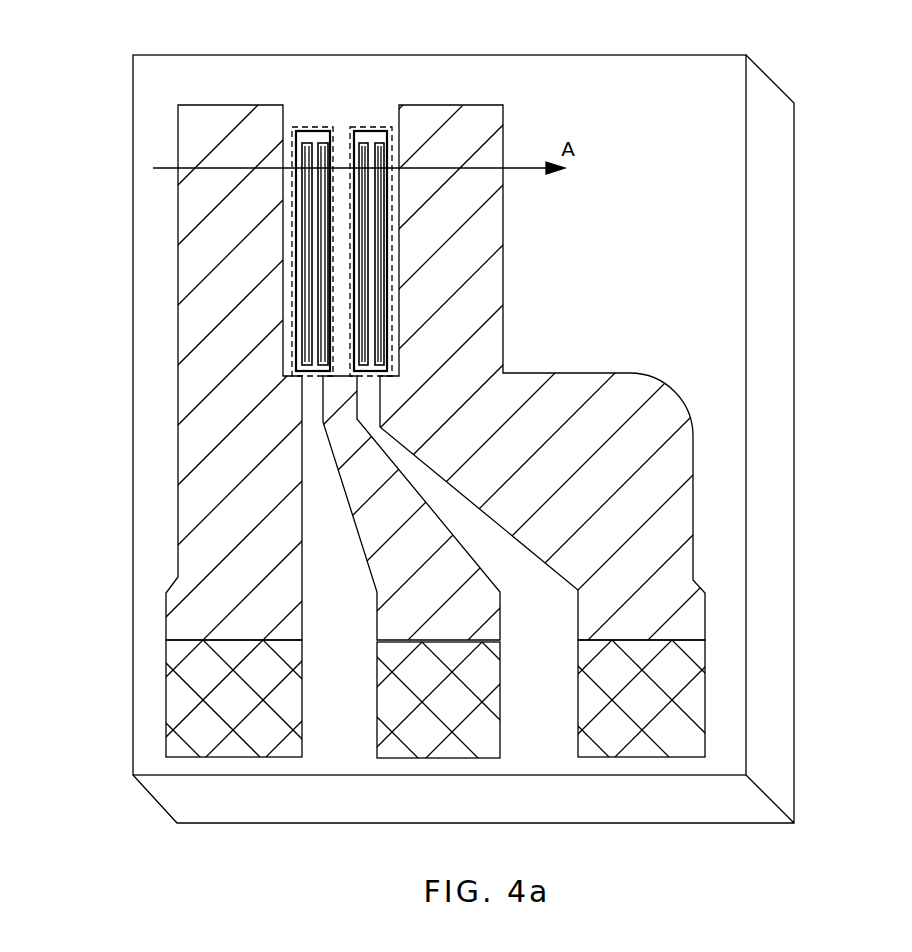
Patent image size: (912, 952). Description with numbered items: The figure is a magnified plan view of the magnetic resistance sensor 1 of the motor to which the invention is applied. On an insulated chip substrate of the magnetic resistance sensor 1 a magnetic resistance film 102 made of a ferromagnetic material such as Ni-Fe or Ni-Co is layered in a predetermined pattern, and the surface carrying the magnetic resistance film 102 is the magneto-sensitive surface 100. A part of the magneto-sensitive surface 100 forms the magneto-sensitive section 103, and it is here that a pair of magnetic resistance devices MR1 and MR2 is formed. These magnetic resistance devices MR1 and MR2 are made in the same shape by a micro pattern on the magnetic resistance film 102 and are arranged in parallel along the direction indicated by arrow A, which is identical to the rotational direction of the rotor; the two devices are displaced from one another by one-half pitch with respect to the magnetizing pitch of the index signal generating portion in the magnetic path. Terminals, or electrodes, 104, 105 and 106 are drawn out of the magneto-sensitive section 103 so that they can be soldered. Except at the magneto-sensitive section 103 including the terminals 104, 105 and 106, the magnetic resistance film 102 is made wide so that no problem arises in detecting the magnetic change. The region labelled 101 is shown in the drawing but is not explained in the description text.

The magnetic resistance sensor 1 is at (586, 55).
The magneto-sensitive surface 100 is at (615, 250).
The first electrode 101 is at (732, 173).
The magnetic resistance film 102 is at (165, 610).
The magneto-sensitive section 103 is at (295, 284).
The terminal (electrode) 104 is at (165, 703).
The terminal (electrode) 105 is at (405, 760).
The terminal (electrode) 106 is at (705, 743).
The magnetic resistance device MR1 is at (316, 126).
The magnetic resistance device MR2 is at (360, 126).